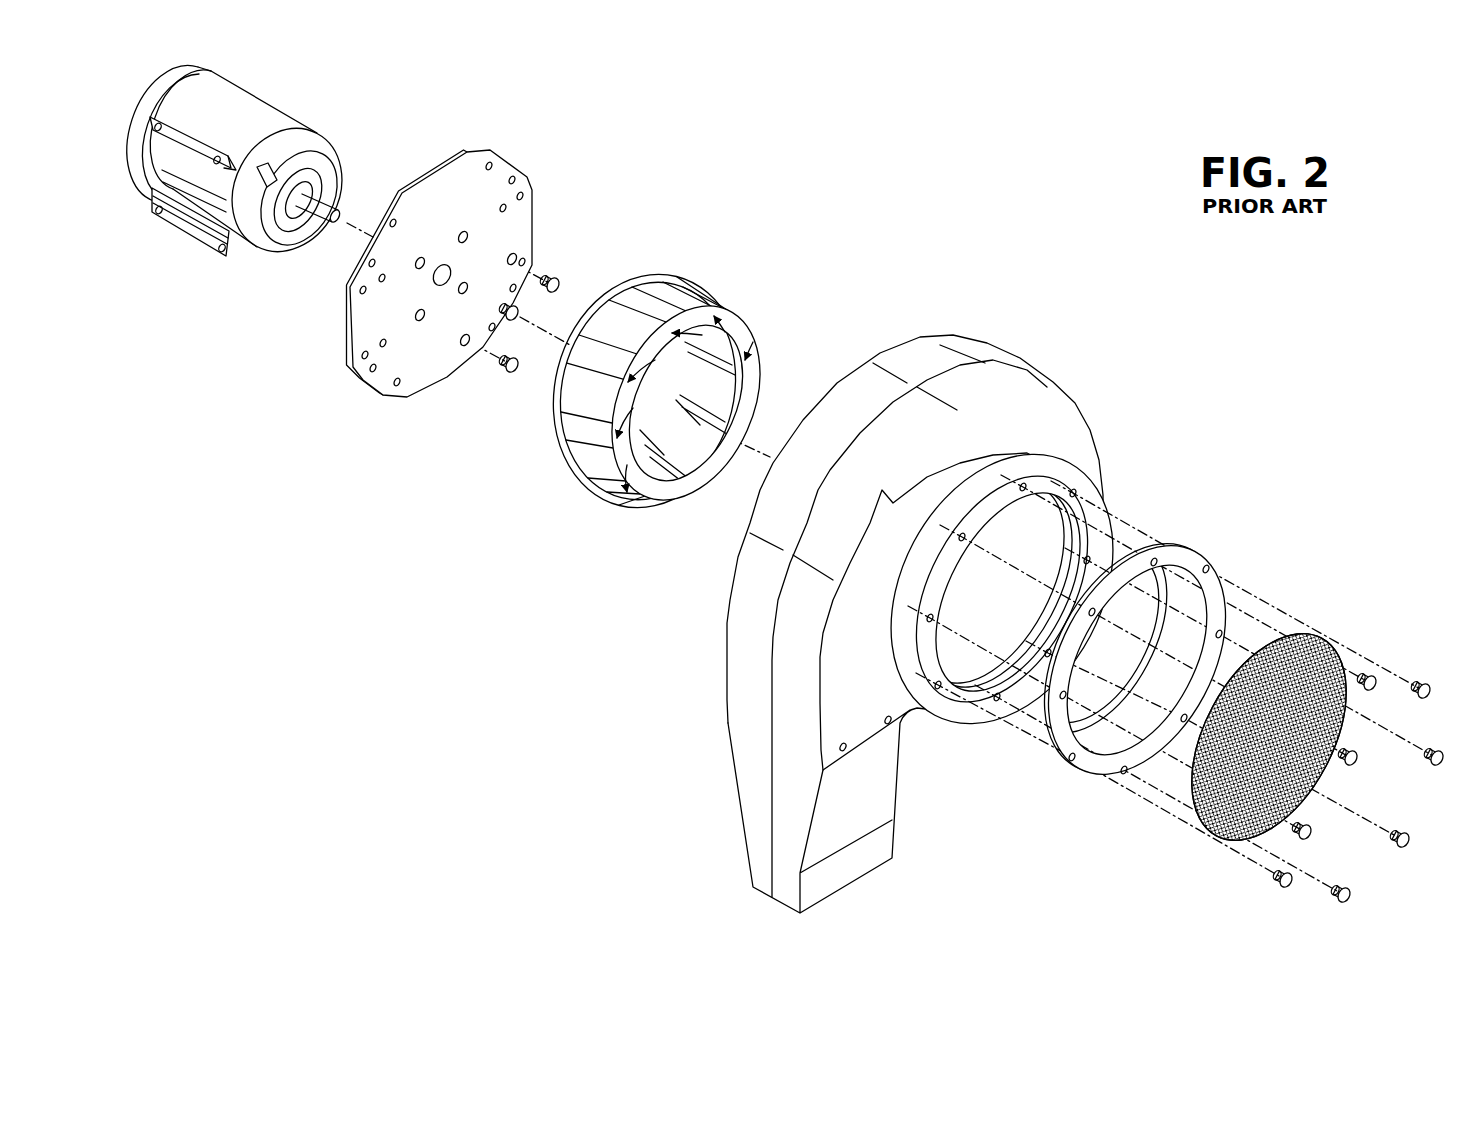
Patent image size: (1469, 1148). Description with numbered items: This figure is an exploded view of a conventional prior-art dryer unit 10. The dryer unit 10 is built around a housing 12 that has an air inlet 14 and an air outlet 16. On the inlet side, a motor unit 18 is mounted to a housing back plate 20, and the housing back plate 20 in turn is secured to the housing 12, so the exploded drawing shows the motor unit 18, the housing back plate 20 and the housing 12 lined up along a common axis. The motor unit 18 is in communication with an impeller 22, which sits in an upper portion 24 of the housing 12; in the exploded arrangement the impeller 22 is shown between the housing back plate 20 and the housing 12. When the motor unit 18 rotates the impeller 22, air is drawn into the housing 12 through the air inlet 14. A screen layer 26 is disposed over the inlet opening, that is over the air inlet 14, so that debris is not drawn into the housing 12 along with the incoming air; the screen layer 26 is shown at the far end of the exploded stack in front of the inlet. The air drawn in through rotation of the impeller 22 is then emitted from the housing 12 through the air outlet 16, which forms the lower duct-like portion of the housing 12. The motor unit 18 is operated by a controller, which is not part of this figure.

The dryer unit 10 is at (1012, 140).
The housing 12 is at (925, 618).
The air inlet 14 is at (1023, 537).
The air outlet 16 is at (766, 895).
The motor unit 18 is at (253, 121).
The housing back plate 20 is at (452, 195).
The impeller 22 is at (698, 318).
The upper portion 24 is at (1068, 427).
The screen layer 26 is at (1310, 632).